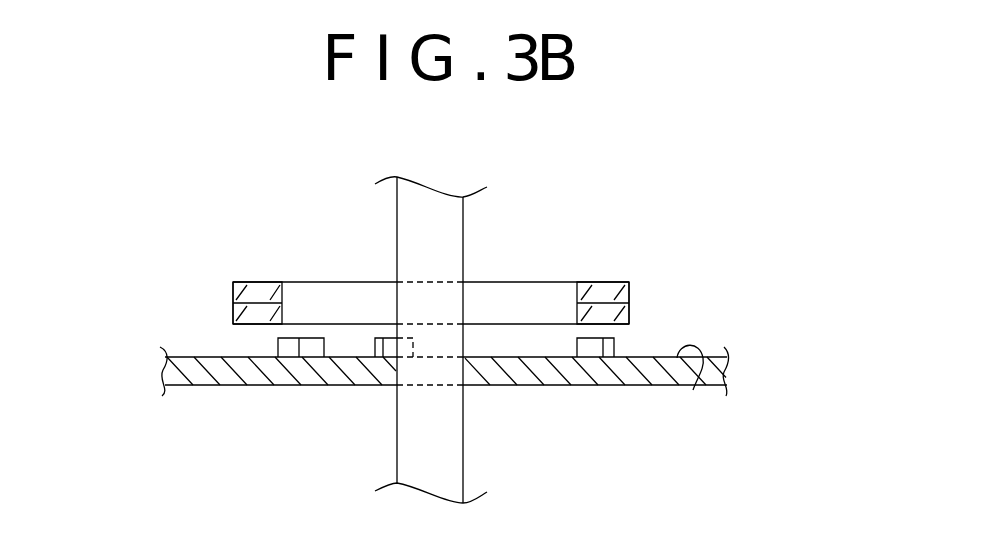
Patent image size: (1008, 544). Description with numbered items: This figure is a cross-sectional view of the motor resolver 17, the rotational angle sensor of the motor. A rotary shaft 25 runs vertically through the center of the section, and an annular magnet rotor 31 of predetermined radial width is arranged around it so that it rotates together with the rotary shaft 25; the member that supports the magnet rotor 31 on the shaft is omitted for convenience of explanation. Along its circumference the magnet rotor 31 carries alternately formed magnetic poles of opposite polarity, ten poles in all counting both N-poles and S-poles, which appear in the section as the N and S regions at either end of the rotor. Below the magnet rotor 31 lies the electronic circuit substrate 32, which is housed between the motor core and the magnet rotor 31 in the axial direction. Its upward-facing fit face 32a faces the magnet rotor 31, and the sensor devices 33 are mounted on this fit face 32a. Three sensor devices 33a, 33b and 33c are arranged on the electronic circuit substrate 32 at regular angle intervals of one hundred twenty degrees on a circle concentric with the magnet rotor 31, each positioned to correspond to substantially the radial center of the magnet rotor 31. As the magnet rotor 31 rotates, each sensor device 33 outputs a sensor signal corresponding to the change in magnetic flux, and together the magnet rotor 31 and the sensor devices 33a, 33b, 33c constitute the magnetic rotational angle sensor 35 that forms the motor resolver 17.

The motor resolver 17 is at (425, 249).
The magnetic rotational angle sensor 35 is at (431, 303).
The rotary shaft 25 is at (464, 232).
The magnet rotor 31 is at (612, 282).
The electronic circuit substrate 32 is at (728, 373).
The fit face 32a is at (693, 390).
The sensor device 33 is at (441, 359).
The sensor device 33a is at (614, 345).
The sensor device 33b is at (278, 347).
The sensor device 33c is at (373, 344).